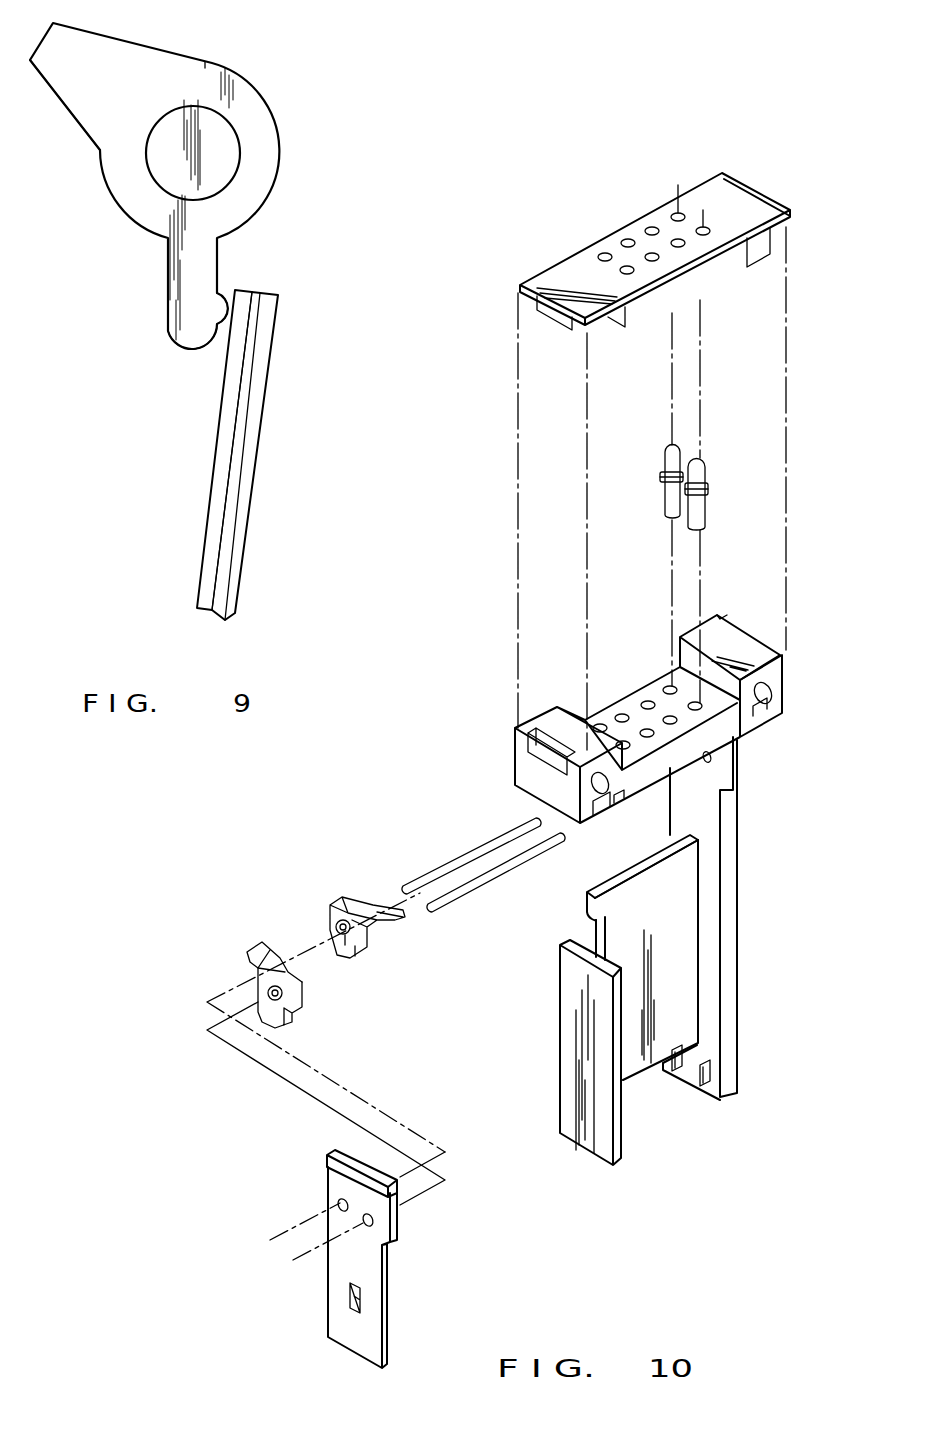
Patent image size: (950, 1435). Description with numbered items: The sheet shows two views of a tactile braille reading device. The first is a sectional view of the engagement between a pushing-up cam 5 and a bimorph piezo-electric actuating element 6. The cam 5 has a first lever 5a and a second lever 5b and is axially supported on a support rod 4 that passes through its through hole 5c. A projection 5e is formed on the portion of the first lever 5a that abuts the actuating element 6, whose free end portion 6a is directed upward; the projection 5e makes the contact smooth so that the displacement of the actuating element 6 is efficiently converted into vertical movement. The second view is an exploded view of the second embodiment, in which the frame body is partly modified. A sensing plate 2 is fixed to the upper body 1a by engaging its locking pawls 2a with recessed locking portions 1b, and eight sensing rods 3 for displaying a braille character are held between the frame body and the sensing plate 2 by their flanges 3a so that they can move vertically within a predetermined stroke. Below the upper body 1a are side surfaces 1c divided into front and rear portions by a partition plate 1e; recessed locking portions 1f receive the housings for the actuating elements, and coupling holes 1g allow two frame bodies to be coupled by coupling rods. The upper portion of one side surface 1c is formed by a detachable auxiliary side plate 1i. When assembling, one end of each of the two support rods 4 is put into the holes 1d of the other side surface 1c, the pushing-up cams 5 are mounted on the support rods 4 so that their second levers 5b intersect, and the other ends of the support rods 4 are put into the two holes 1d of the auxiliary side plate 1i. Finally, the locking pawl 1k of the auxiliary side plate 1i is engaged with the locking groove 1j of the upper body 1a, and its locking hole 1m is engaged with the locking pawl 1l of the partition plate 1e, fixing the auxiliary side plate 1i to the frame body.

In FIG. 10, the upper body 1a is at (755, 722).
In FIG. 10, the recessed locking portions 1b is at (530, 745).
In FIG. 10, the side surfaces 1c is at (738, 1058).
In FIG. 10, the holes 1d is at (711, 759).
In FIG. 10, the partition plate 1e is at (687, 985).
In FIG. 10, the recessed locking portions 1f is at (712, 1083).
In FIG. 10, the coupling holes 1g is at (771, 695).
In FIG. 10, the auxiliary side plate 1i is at (392, 1317).
In FIG. 10, the locking groove 1j is at (628, 810).
In FIG. 10, the locking pawl 1k is at (393, 1192).
In FIG. 10, the locking pawl 1l is at (597, 902).
In FIG. 10, the locking hole 1m is at (360, 1295).
In FIG. 10, the sensing plate 2 is at (563, 270).
In FIG. 10, the locking pawls 2a is at (540, 312).
In FIG. 10, the sensing rods 3 is at (707, 507).
In FIG. 10, the flanges 3a is at (707, 490).
In FIG. 9, the support rods 4 is at (223, 143).
In FIG. 10, the support rods 4 is at (485, 847).
In FIG. 9, the pushing-up cams 5 is at (272, 167).
In FIG. 10, the pushing-up cams 5 is at (343, 897).
In FIG. 9, the first lever 5a is at (172, 335).
In FIG. 10, the first lever 5a is at (297, 1020).
In FIG. 9, the second lever 5b is at (80, 112).
In FIG. 10, the second lever 5b is at (262, 942).
In FIG. 9, the through holes 5c is at (207, 108).
In FIG. 10, the through holes 5c is at (272, 998).
In FIG. 9, the projection 5e is at (220, 293).
In FIG. 9, the piezo-electric actuating element 6 is at (256, 500).
In FIG. 9, the free end portion 6a is at (222, 393).